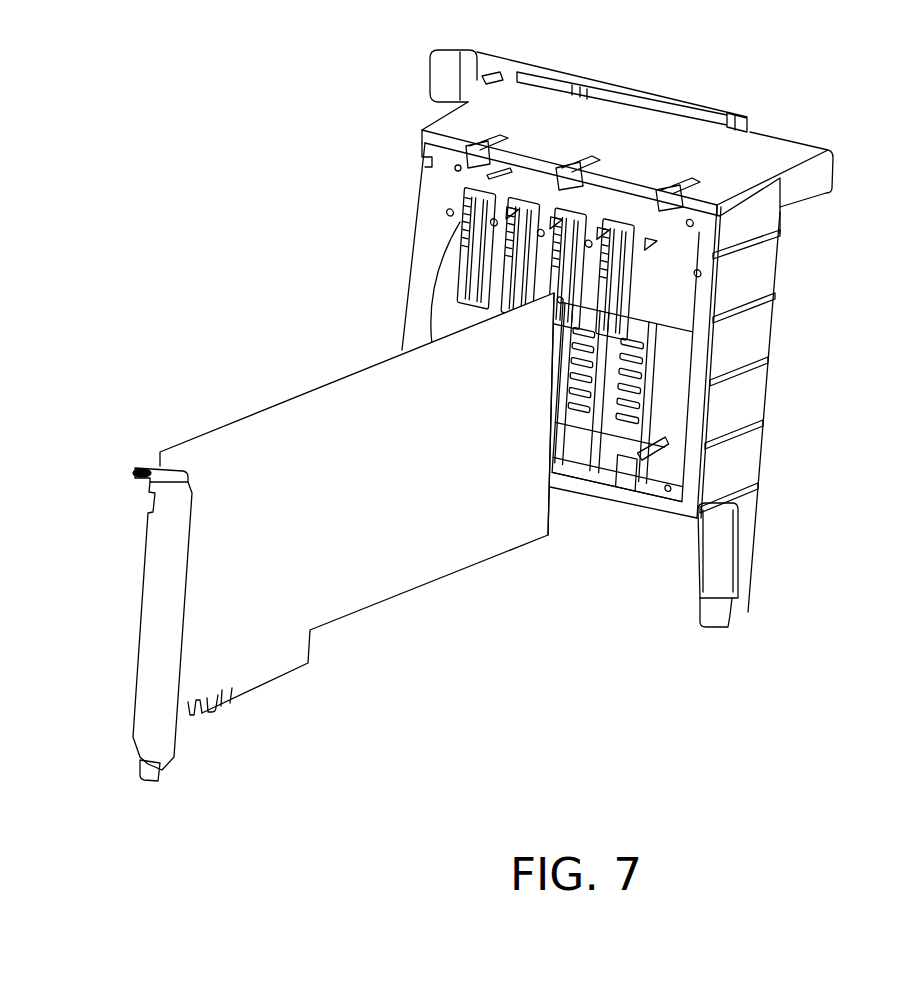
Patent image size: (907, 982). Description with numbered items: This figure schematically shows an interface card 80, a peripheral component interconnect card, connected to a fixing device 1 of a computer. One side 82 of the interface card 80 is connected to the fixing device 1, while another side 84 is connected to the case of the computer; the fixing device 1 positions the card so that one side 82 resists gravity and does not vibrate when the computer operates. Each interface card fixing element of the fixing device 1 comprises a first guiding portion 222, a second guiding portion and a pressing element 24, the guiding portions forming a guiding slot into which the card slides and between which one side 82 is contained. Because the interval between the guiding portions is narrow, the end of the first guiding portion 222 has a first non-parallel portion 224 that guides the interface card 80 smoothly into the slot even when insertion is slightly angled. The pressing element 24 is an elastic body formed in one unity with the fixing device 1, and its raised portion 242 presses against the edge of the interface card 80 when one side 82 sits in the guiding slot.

The fixing device 1 is at (598, 334).
The pressing element 24 is at (567, 260).
The raised portion 242 is at (570, 280).
The first non-parallel portion 224 is at (560, 307).
The first guiding portion 222 is at (563, 380).
The interface card 80 is at (355, 537).
The one side 82 is at (518, 518).
The another side 84 is at (213, 637).